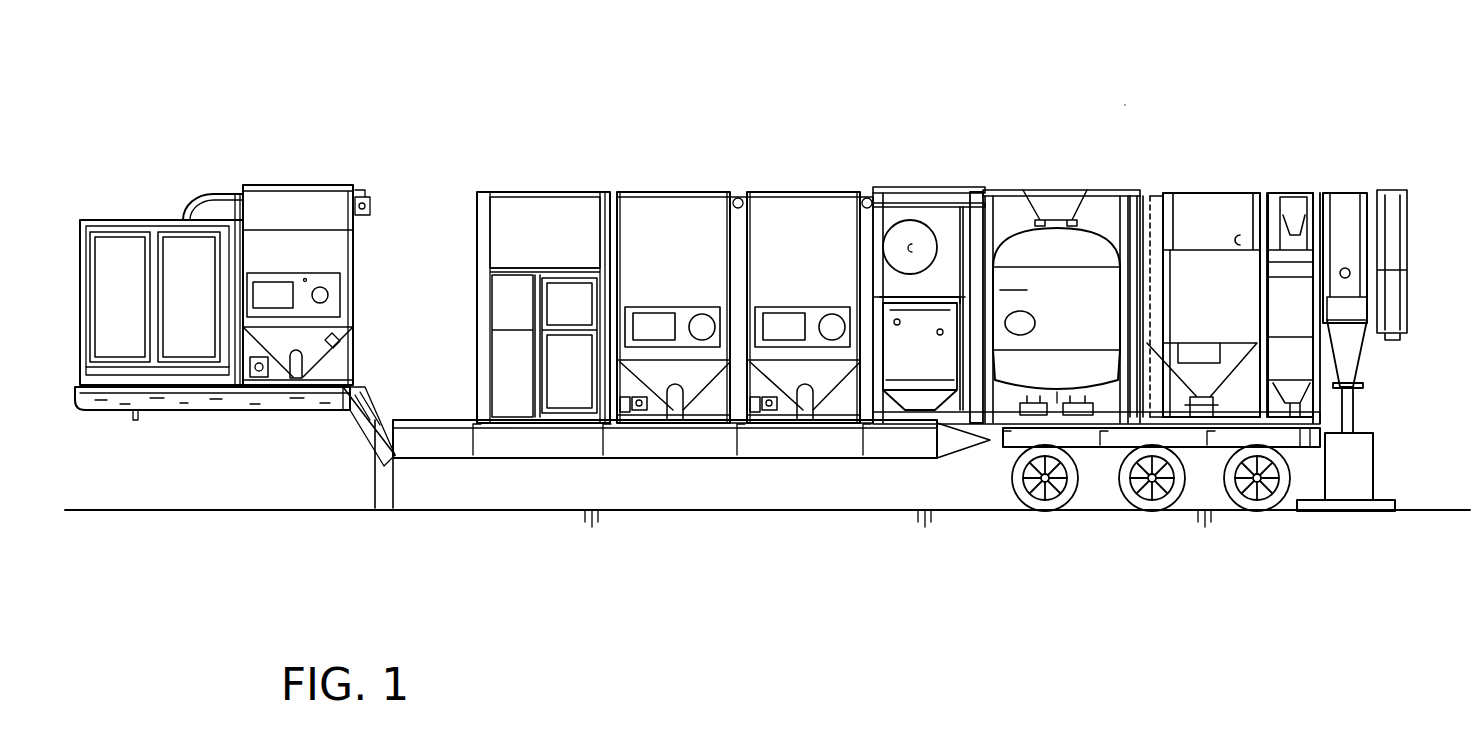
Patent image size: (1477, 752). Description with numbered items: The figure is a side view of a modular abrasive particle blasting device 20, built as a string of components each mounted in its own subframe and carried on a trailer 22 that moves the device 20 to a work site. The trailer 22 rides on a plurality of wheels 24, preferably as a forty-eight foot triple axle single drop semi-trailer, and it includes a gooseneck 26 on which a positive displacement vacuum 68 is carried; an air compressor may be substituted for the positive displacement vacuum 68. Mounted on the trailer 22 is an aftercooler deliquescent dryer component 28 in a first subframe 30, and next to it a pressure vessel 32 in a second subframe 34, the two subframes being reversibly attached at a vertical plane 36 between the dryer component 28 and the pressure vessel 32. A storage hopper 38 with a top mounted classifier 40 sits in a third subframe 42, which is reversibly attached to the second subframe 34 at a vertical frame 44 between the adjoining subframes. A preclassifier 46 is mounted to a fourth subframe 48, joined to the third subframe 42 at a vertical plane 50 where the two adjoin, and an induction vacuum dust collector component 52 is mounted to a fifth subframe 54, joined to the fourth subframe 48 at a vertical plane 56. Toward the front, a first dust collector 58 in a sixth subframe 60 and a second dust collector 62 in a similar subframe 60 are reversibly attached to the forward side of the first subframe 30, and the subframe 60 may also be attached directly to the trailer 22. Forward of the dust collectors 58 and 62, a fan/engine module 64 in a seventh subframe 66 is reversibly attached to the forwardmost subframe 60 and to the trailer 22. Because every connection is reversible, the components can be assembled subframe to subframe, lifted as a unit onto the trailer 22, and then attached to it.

The modular abrasive particle blasting device 20 is at (1132, 100).
The trailer 22 is at (700, 470).
The wheels 24 is at (1022, 498).
The gooseneck 26 is at (227, 407).
The aftercooler deliquescent dryer component 28 is at (935, 187).
The first subframe 30 is at (903, 183).
The pressure vessel 32 is at (1082, 242).
The second subframe 34 is at (1010, 183).
The vertical plane 36 is at (978, 183).
The storage hopper 38 is at (1180, 267).
The classifier 40 is at (1222, 195).
The third subframe 42 is at (1155, 193).
The vertical frame 44 is at (1137, 190).
The preclassifier 46 is at (1367, 190).
The fourth subframe 48 is at (1296, 200).
The vertical plane 50 is at (1265, 197).
The induction vacuum dust collector component 52 is at (1293, 262).
The fifth subframe 54 is at (1328, 200).
The vertical plane 56 is at (1317, 190).
The first dust collector 58 is at (787, 212).
The sixth subframe 60 is at (695, 190).
The second dust collector 62 is at (647, 207).
The fan/engine module 64 is at (537, 218).
The seventh subframe 66 is at (502, 203).
The positive displacement vacuum 68 is at (203, 202).